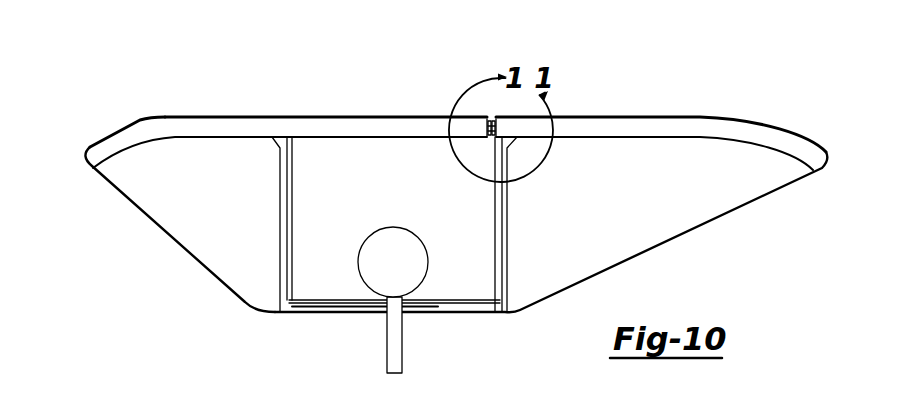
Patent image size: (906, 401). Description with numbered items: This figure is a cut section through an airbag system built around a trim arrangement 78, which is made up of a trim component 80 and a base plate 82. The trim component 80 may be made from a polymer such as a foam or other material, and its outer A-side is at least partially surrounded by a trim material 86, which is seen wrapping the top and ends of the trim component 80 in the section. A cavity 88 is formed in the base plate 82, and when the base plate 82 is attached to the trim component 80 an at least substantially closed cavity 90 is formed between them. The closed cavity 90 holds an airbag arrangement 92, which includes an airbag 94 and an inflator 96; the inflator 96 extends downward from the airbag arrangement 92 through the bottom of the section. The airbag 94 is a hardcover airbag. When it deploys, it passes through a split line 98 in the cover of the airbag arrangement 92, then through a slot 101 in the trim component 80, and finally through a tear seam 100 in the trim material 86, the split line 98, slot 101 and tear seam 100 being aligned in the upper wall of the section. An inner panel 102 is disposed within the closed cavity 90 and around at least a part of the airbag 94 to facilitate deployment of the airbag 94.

The trim arrangement 78 is at (444, 204).
The trim component 80 is at (762, 119).
The base plate 82 is at (757, 150).
The trim material 86 is at (121, 126).
The cavity 88 is at (488, 240).
The closed cavity 90 is at (278, 137).
The airbag arrangement 92 is at (461, 291).
The airbag 94 is at (483, 205).
The inflator 96 is at (386, 340).
The split line 98 is at (489, 138).
The tear seam 100 is at (488, 118).
The slot 101 is at (495, 138).
The inner panel 102 is at (295, 214).